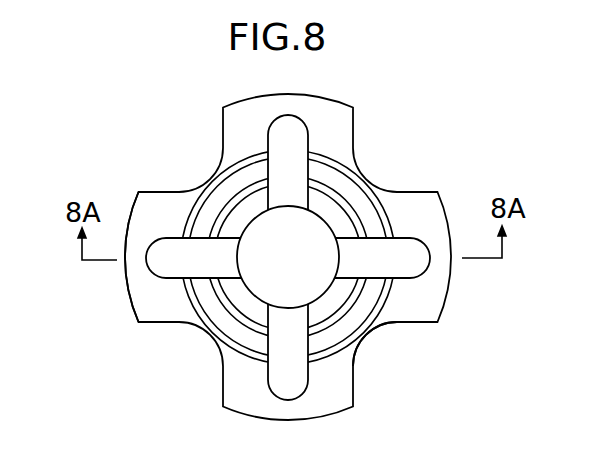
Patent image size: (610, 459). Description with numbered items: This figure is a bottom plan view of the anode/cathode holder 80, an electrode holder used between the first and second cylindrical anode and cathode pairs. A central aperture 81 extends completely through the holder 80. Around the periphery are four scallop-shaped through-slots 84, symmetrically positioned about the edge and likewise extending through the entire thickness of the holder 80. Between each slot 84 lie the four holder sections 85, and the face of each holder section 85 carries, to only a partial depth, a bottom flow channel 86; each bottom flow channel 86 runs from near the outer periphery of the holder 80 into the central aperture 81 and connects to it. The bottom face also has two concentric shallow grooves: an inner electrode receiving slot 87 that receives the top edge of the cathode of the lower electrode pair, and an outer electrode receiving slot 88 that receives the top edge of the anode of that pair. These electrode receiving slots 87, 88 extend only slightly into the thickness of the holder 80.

The anode/cathode holder 80 is at (480, 163).
The central aperture 81 is at (249, 291).
The scallop-shaped through-slot 84 is at (210, 181).
The holder section 85 is at (128, 288).
The bottom flow channel 86 is at (297, 368).
The inner electrode receiving slot 87 is at (335, 188).
The outer electrode receiving slot 88 is at (365, 332).